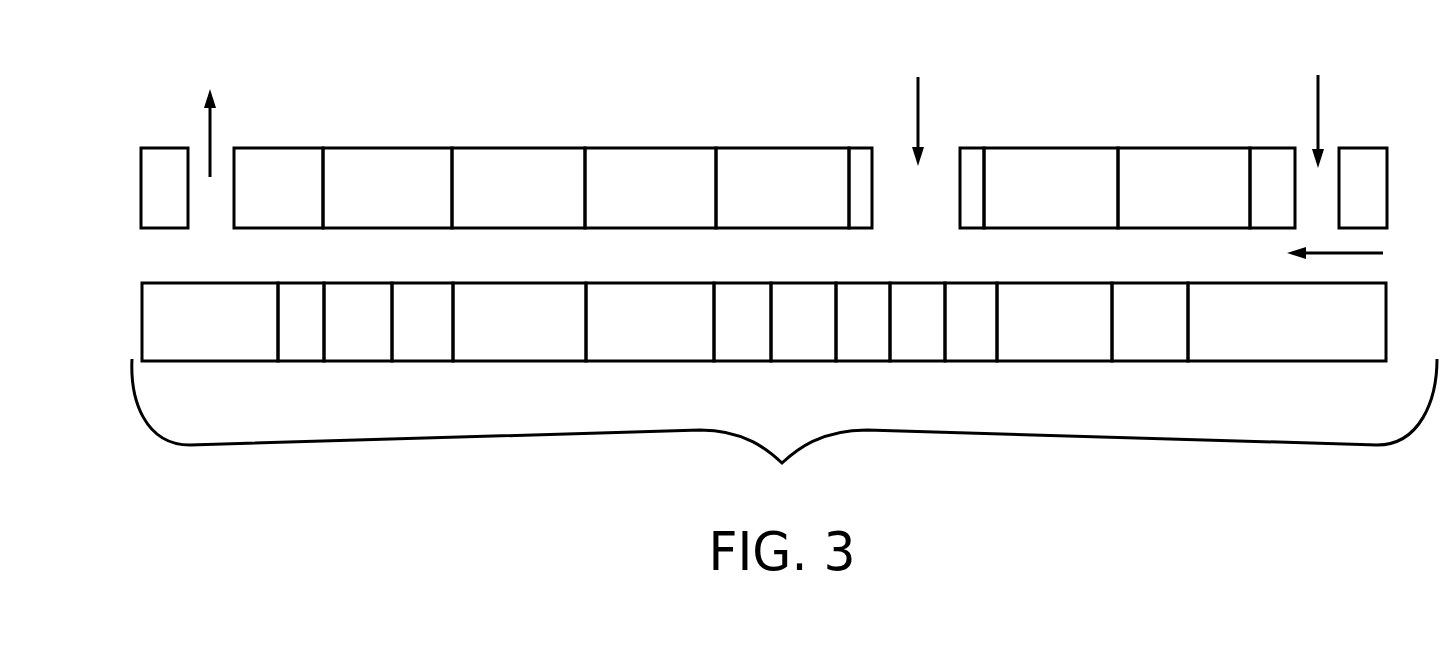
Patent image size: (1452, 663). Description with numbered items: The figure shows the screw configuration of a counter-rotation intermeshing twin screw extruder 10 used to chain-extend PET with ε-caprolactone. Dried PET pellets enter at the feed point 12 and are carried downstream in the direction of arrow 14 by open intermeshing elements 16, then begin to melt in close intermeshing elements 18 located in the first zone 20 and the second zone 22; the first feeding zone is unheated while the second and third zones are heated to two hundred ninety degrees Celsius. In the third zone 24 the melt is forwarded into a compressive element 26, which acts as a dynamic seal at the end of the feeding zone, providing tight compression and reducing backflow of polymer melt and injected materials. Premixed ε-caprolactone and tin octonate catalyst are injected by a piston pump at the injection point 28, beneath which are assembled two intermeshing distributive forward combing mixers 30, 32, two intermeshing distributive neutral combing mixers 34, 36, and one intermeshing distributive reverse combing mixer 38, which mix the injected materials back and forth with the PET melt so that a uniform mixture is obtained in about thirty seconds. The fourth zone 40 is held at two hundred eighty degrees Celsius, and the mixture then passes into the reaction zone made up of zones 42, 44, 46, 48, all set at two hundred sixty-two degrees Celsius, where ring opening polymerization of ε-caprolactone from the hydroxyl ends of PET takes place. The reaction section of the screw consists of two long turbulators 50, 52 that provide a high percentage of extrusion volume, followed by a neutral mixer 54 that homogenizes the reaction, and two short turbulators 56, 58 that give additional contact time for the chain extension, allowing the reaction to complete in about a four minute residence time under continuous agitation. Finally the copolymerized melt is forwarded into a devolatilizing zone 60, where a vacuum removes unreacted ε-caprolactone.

The twin screw extruder 10 is at (784, 435).
The feed point 12 is at (1312, 102).
The arrow 14 is at (1357, 255).
The open intermeshing elements 16 is at (1270, 339).
The close intermeshing elements 18 is at (1131, 339).
The first zone 20 is at (1250, 148).
The second zone 22 is at (1118, 148).
The third zone 24 is at (984, 148).
The compressive element 26 is at (1033, 339).
The injection point 28 is at (917, 100).
The intermeshing distributive forward combing mixer 30 is at (949, 339).
The intermeshing distributive forward combing mixer 32 is at (896, 339).
The intermeshing distributive neutral combing mixer 34 is at (842, 339).
The intermeshing distributive neutral combing mixer 36 is at (784, 339).
The intermeshing distributive reverse combing mixer 38 is at (721, 339).
The fourth zone 40 is at (849, 148).
The reaction zone 42 is at (716, 148).
The reaction zone 44 is at (585, 148).
The reaction zone 46 is at (452, 148).
The reaction zone 48 is at (323, 148).
The turbulator 50 is at (629, 339).
The turbulator 52 is at (500, 339).
The neutral mixer 54 is at (403, 339).
The turbulator 56 is at (338, 339).
The turbulator 58 is at (281, 339).
The devolatilizing zone 60 is at (210, 112).